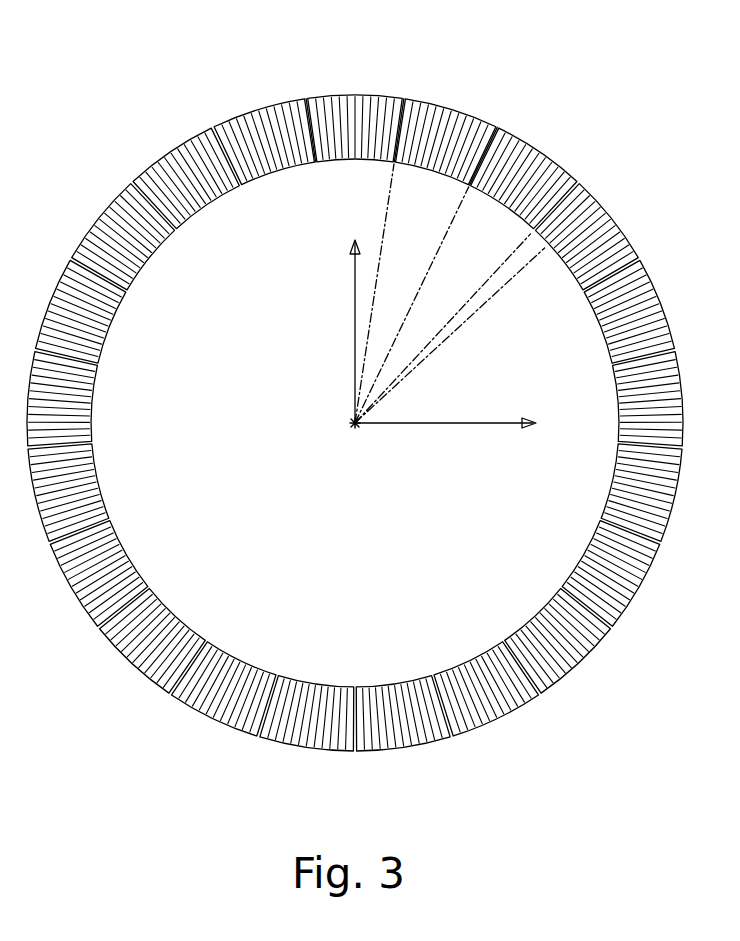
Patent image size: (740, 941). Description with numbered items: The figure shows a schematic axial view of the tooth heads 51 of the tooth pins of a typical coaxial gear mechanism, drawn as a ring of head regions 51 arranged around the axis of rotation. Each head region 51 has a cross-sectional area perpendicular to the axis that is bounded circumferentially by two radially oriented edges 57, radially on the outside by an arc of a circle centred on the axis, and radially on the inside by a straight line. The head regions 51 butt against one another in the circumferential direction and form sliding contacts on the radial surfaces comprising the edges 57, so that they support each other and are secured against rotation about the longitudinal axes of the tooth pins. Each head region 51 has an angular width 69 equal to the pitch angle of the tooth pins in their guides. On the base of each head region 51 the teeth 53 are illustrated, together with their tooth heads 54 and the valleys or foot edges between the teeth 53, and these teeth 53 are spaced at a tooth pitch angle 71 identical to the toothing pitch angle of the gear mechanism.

The tooth head 51 is at (163, 128).
The teeth 53 is at (294, 100).
The tooth heads 54 is at (593, 198).
The edges 57 is at (392, 99).
The angular width 69 is at (382, 367).
The tooth pitch angle 71 is at (477, 305).